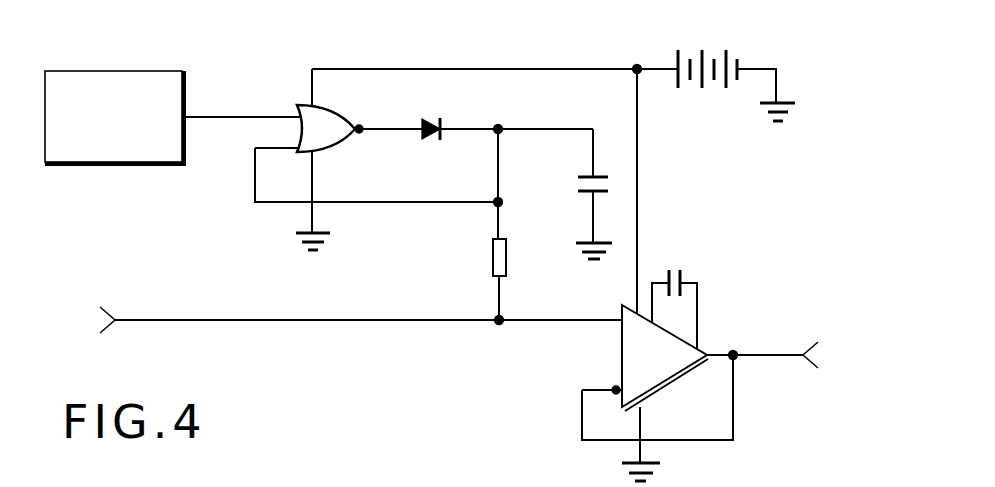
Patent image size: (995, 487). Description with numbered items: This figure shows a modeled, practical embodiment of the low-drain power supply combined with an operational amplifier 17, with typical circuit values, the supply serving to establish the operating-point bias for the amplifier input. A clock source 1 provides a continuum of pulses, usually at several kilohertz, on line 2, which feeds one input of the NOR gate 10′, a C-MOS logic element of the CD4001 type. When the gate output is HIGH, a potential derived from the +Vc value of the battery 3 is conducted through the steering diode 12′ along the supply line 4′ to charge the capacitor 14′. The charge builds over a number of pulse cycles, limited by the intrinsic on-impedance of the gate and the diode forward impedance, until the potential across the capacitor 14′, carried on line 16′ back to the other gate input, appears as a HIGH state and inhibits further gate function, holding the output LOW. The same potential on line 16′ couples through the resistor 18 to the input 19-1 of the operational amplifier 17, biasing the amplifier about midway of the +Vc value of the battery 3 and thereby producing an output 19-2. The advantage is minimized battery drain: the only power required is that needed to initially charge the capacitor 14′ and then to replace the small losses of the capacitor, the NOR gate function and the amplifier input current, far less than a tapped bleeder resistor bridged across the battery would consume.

The clock source 1 is at (136, 86).
The line 2 is at (192, 116).
The battery 3 is at (729, 63).
The NOR gate 10′ is at (312, 115).
The steering diode 12′ is at (430, 136).
The supply line 4′ is at (543, 130).
The capacitor 14′ is at (578, 186).
The line 16′ is at (418, 203).
The resistor 18 is at (494, 261).
The input 19-1 is at (458, 322).
The operational amplifier 17 is at (652, 373).
The output 19-2 is at (780, 360).